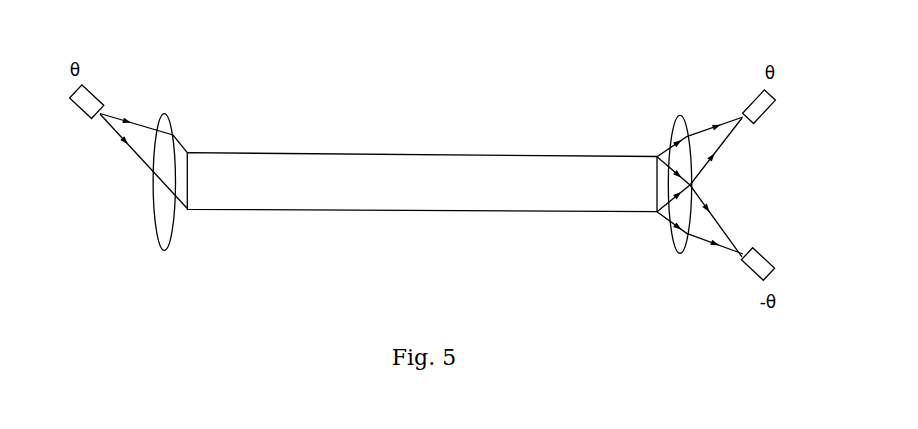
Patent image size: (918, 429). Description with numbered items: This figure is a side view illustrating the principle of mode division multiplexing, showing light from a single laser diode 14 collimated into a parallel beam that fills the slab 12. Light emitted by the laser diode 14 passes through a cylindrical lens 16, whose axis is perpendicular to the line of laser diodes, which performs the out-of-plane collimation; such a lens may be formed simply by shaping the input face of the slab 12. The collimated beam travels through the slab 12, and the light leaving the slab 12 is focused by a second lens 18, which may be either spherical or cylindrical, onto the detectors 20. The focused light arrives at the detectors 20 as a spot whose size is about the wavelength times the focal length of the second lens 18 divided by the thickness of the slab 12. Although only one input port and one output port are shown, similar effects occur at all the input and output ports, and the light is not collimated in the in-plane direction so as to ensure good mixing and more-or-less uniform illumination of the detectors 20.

The slab 12 is at (422, 170).
The laser diode 14 is at (81, 110).
The cylindrical lens 16 is at (163, 196).
The second lens 18 is at (679, 174).
The detectors 20 is at (765, 185).